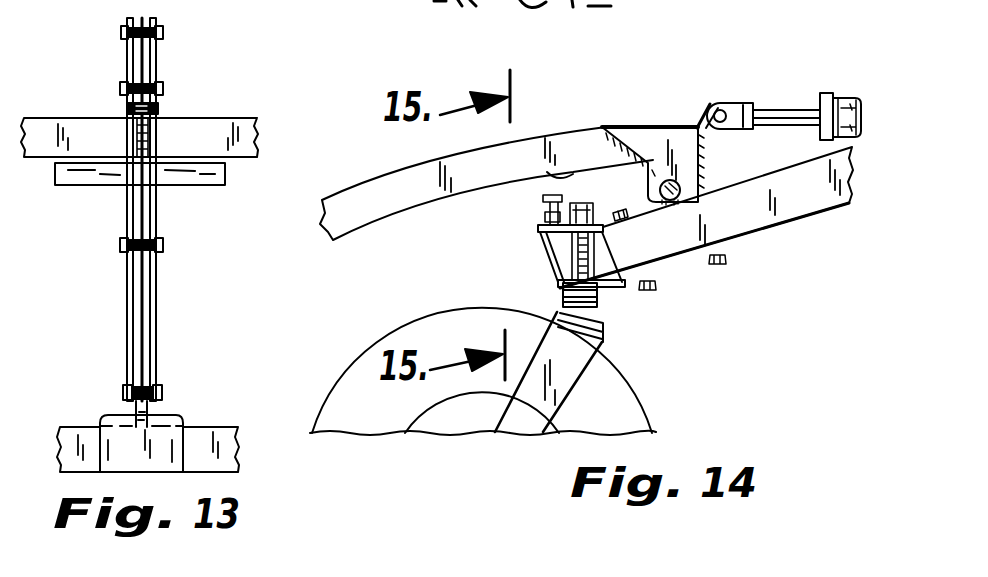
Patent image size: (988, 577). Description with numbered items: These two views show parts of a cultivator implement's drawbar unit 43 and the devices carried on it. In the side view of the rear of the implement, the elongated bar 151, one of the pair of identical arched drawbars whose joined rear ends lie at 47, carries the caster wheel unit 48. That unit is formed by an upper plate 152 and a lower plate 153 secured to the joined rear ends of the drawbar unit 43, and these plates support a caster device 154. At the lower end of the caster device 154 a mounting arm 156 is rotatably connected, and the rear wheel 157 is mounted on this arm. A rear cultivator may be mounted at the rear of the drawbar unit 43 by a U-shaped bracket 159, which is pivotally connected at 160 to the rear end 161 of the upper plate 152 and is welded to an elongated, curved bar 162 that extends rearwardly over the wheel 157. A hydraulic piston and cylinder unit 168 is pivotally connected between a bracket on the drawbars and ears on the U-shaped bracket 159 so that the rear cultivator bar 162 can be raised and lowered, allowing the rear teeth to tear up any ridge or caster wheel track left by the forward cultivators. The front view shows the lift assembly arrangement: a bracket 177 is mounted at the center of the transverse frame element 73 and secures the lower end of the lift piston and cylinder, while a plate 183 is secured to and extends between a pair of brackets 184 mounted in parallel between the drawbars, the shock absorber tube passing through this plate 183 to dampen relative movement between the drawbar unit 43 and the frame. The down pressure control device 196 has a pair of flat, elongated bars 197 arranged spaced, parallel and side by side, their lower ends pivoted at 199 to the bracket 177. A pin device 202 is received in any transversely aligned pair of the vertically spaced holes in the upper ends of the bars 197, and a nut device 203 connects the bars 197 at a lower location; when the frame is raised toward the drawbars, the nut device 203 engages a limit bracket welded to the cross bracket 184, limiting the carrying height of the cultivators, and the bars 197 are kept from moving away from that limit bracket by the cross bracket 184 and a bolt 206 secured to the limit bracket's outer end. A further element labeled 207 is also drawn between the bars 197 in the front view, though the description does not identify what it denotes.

In FIG. 14, the drawbar unit 43 is at (767, 242).
In FIG. 14, the joined rear ends of the drawbars 47 is at (832, 193).
In FIG. 14, the caster wheel unit 48 is at (675, 103).
In FIG. 13, the transverse frame element 73 is at (72, 427).
In FIG. 14, the elongated bar 151 is at (719, 217).
In FIG. 14, the upper plate 152 is at (540, 228).
In FIG. 14, the lower plate 153 is at (675, 275).
In FIG. 14, the caster device 154 is at (572, 259).
In FIG. 14, the mounting arm 156 is at (568, 353).
In FIG. 14, the rear wheel 157 is at (443, 325).
In FIG. 14, the U-shaped bracket 159 is at (636, 138).
In FIG. 14, the pivotal connection 160 is at (679, 191).
In FIG. 14, the rear end of the upper plate 161 is at (640, 215).
In FIG. 14, the elongated curved bar 162 is at (410, 170).
In FIG. 14, the hydraulic piston and cylinder unit 168 is at (849, 94).
In FIG. 13, the bracket 177 is at (173, 416).
In FIG. 13, the plate 183 is at (90, 186).
In FIG. 13, the brackets 184 is at (68, 118).
In FIG. 13, the down pressure control device 196 is at (134, 209).
In FIG. 13, the flat elongated bars 197 is at (157, 312).
In FIG. 13, the pivot 199 is at (165, 388).
In FIG. 13, the pin device 202 is at (160, 88).
In FIG. 13, the nut device 203 is at (164, 245).
In FIG. 13, the bolt 206 is at (158, 108).
In FIG. 13, the rod 207 is at (145, 78).